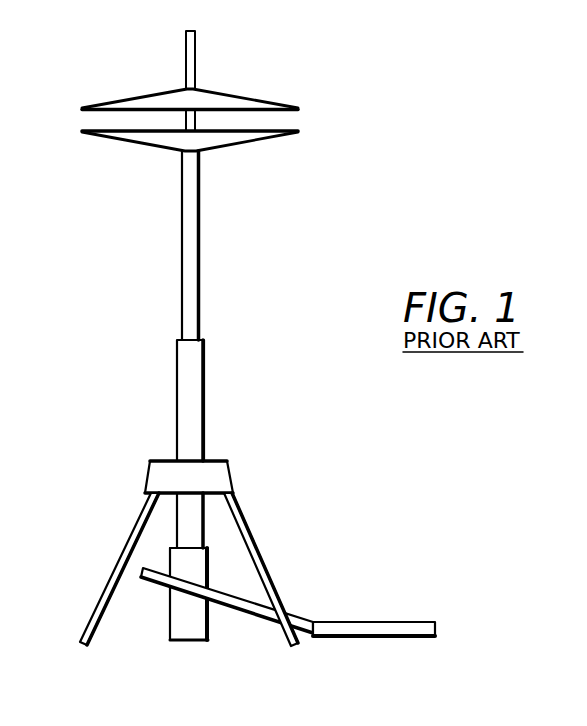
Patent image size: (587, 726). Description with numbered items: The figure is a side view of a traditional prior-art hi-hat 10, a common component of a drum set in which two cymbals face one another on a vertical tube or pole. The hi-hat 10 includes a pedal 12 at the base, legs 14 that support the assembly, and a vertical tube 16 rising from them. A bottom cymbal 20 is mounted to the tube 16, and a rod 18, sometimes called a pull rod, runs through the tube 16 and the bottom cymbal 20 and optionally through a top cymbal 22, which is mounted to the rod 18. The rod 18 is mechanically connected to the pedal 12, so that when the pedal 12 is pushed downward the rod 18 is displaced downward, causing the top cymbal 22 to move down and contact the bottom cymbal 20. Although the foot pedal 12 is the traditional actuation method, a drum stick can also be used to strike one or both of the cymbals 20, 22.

The hi-hat 10 is at (233, 361).
The pedal 12 is at (260, 613).
The legs 14 is at (248, 525).
The tube 16 is at (182, 302).
The rod 18 is at (185, 63).
The bottom cymbal 20 is at (232, 144).
The top cymbal 22 is at (240, 98).